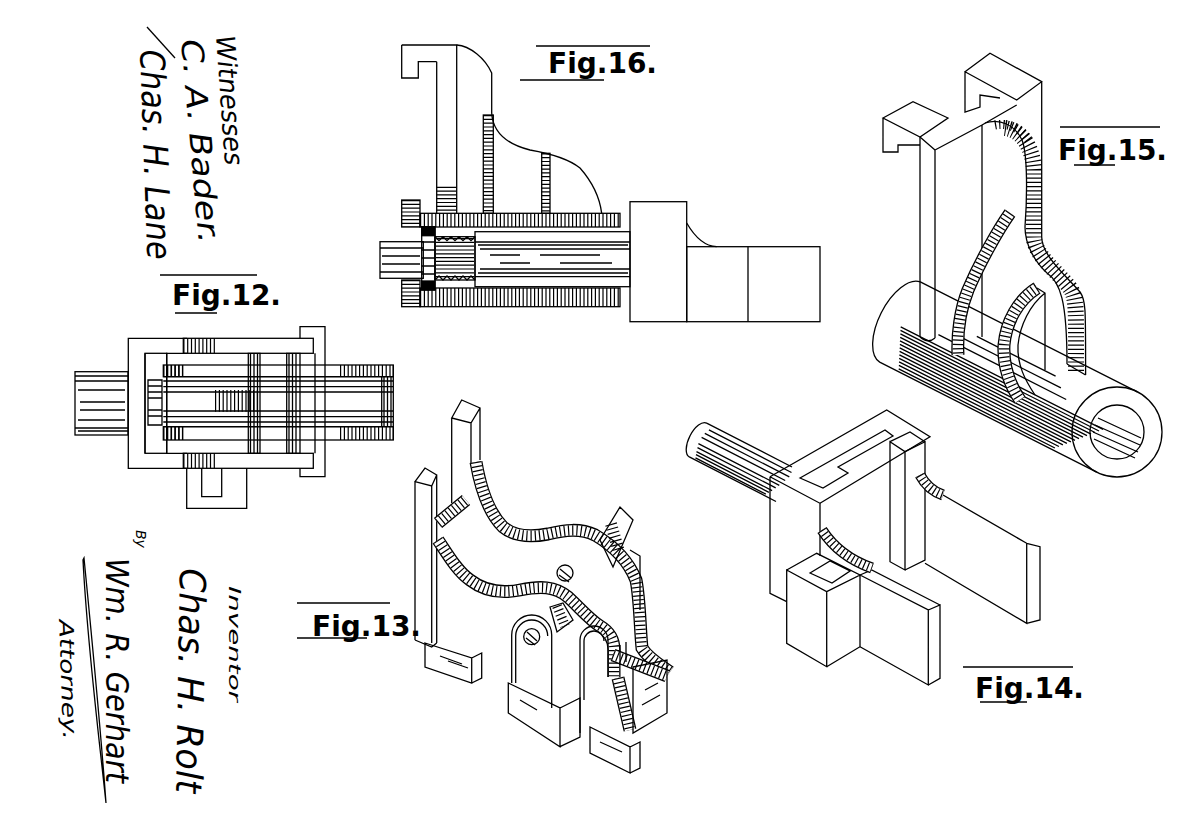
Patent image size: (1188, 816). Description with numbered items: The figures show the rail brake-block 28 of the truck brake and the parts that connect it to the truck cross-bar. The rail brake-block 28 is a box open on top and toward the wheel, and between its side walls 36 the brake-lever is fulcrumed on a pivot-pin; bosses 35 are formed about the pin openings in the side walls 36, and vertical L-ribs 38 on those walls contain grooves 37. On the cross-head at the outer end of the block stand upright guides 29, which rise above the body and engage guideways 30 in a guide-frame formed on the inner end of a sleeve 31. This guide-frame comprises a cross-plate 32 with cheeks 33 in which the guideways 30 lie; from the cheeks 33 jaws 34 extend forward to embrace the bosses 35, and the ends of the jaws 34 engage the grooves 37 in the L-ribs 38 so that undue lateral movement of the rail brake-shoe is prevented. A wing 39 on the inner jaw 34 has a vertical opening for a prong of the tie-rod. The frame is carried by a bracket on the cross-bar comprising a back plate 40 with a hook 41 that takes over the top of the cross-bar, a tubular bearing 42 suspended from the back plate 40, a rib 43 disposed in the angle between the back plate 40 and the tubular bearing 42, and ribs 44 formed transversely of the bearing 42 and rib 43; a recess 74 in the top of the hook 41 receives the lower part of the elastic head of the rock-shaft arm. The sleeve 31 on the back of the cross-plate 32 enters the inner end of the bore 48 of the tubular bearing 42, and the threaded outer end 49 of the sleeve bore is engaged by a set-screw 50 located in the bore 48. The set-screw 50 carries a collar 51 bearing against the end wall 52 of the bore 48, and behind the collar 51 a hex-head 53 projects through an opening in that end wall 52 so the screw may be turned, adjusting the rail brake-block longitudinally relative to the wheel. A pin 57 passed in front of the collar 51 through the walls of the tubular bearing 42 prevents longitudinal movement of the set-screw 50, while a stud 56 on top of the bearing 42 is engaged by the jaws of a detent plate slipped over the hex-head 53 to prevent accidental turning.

In FIG. 13, the rail brake-block 28 is at (597, 520).
In FIG. 12, the upright guides 29 is at (150, 358).
In FIG. 13, the upright guides 29 is at (426, 480).
In FIG. 14, the guideways 30 is at (892, 440).
In FIG. 16, the sleeve 31 is at (577, 265).
In FIG. 12, the sleeve 31 is at (120, 417).
In FIG. 14, the sleeve 31 is at (758, 452).
In FIG. 12, the cross-plate 32 is at (140, 443).
In FIG. 14, the cross-plate 32 is at (830, 440).
In FIG. 12, the cheeks 33 is at (158, 458).
In FIG. 14, the cheeks 33 is at (795, 512).
In FIG. 12, the jaws 34 is at (277, 323).
In FIG. 14, the jaws 34 is at (987, 610).
In FIG. 13, the bosses 35 is at (515, 636).
In FIG. 12, the side walls 36 is at (333, 370).
In FIG. 13, the side walls 36 is at (612, 647).
In FIG. 13, the grooves 37 is at (617, 523).
In FIG. 12, the vertical L-ribs 38 is at (313, 333).
In FIG. 13, the vertical L-ribs 38 is at (630, 550).
In FIG. 16, the wing 39 is at (733, 282).
In FIG. 12, the wing 39 is at (233, 498).
In FIG. 14, the wing 39 is at (797, 608).
In FIG. 16, the back plate 40 is at (447, 146).
In FIG. 15, the back plate 40 is at (925, 228).
In FIG. 16, the hook 41 is at (433, 55).
In FIG. 15, the hook 41 is at (895, 143).
In FIG. 16, the tubular bearing 42 is at (560, 298).
In FIG. 15, the tubular bearing 42 is at (1022, 436).
In FIG. 16, the rib 43 is at (506, 150).
In FIG. 15, the rib 43 is at (995, 187).
In FIG. 16, the ribs 44 is at (548, 197).
In FIG. 15, the ribs 44 is at (958, 385).
In FIG. 16, the bore 48 is at (473, 258).
In FIG. 15, the bore 48 is at (1120, 450).
In FIG. 16, the outer end 49 is at (480, 262).
In FIG. 16, the set-screw 50 is at (458, 243).
In FIG. 16, the collar 51 is at (432, 284).
In FIG. 16, the end wall 52 is at (410, 296).
In FIG. 16, the hex-head 53 is at (389, 250).
In FIG. 16, the stud 56 is at (412, 204).
In FIG. 16, the pin 57 is at (437, 232).
In FIG. 15, the recess 74 is at (958, 103).